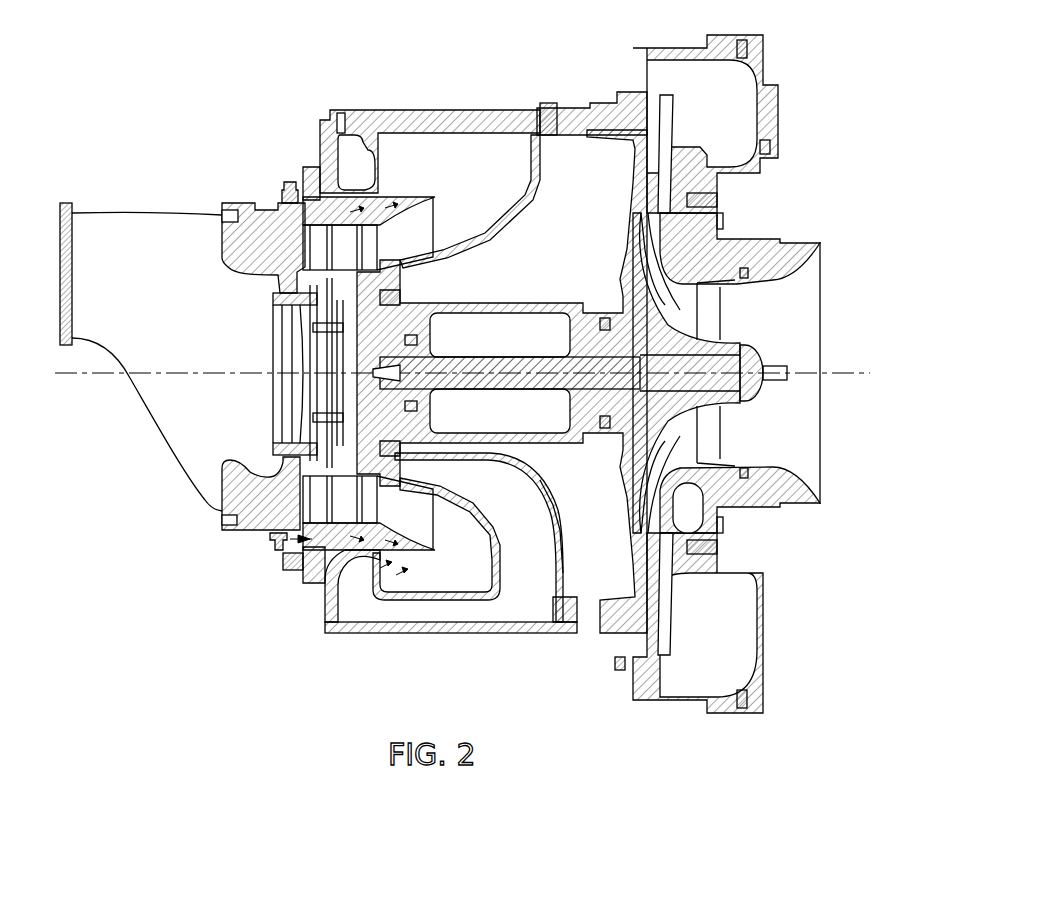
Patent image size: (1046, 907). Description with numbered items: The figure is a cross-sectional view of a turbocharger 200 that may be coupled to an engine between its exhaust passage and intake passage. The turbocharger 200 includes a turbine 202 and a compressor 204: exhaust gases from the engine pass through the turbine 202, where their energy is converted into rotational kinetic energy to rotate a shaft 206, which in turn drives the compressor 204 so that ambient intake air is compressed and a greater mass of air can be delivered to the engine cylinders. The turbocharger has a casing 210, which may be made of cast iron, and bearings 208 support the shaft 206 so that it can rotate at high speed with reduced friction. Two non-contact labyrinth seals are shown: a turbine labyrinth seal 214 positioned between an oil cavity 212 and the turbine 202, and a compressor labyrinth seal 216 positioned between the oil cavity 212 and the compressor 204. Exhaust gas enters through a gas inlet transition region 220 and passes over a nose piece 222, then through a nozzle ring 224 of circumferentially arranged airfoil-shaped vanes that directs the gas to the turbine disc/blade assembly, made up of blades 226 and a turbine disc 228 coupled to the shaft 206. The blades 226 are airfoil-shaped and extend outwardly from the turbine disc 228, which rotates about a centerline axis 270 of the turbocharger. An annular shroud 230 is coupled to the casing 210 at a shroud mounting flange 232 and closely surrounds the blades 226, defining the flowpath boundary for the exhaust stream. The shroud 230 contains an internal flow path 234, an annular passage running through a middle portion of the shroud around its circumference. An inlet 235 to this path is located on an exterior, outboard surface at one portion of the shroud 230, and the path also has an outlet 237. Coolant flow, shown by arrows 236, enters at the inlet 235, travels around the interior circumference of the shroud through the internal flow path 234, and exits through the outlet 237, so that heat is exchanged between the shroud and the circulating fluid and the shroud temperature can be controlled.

The turbocharger 200 is at (180, 31).
The turbine 202 is at (220, 165).
The compressor 204 is at (808, 186).
The shaft 206 is at (700, 420).
The bearings 208 is at (560, 338).
The casing 210 is at (412, 108).
The oil cavity 212 is at (608, 496).
The turbine labyrinth seal 214 is at (398, 452).
The compressor labyrinth seal 216 is at (585, 436).
The gas inlet transition region 220 is at (166, 303).
The nose piece 222 is at (300, 362).
The nozzle ring 224 is at (282, 200).
The blades 226 is at (372, 252).
The turbine disc 228 is at (312, 352).
The annular shroud 230 is at (418, 196).
The shroud mounting flange 232 is at (312, 168).
The internal flow path 234 is at (395, 196).
The inlet 235 is at (275, 548).
The arrows 236 is at (292, 572).
The outlet 237 is at (392, 570).
The centerline axis 270 is at (110, 380).